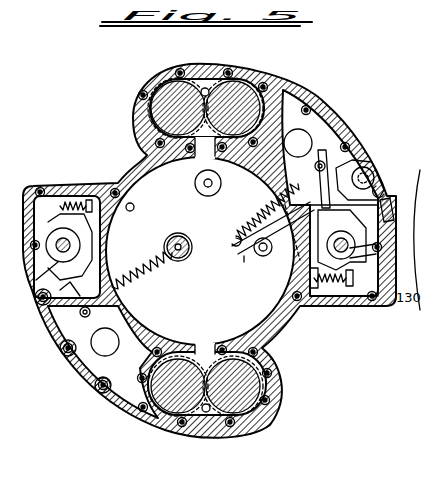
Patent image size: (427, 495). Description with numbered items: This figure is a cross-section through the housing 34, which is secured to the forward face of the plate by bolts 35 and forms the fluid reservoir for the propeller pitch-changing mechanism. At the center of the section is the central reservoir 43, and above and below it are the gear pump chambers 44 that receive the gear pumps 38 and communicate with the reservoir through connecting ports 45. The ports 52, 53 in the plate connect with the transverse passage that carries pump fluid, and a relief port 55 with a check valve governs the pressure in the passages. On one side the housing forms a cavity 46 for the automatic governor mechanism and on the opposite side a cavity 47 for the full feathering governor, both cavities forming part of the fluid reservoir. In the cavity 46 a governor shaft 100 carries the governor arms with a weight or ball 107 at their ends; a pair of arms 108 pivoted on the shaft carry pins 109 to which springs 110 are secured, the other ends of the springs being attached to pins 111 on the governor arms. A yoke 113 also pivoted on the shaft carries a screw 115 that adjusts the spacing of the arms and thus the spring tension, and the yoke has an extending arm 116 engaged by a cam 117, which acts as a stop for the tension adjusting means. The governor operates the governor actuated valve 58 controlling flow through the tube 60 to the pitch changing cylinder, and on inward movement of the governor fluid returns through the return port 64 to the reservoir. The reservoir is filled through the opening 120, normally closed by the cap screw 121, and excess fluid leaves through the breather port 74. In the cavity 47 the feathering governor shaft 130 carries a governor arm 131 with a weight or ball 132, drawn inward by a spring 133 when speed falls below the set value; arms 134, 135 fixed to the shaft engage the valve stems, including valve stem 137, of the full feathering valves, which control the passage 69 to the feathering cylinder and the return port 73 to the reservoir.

The housing 34 is at (80, 381).
The bolts 35 is at (96, 392).
The gear pumps 38 is at (250, 80).
The central reservoir 43 is at (268, 318).
The gear pump chambers 44 is at (203, 78).
The connecting ports 45 is at (198, 150).
The cavity 46 is at (300, 100).
The cavity 47 is at (55, 352).
The port 52 is at (206, 88).
The port 53 is at (210, 412).
The relief port 55 is at (212, 183).
The governor actuated valve 58 is at (348, 286).
The tube 60 is at (263, 256).
The return port 64 is at (284, 226).
The passage 69 is at (186, 256).
The return port 73 is at (133, 205).
The breather port 74 is at (186, 238).
The shaft 100 is at (376, 270).
The weight or ball 107 is at (308, 135).
The arms 108 is at (250, 265).
The pins 109 is at (236, 249).
The springs 110 is at (270, 210).
The pins 111 is at (330, 171).
The yoke 113 is at (372, 238).
The screw 115 is at (372, 170).
The extending arm 116 is at (350, 165).
The cam 117 is at (374, 160).
The opening 120 is at (386, 192).
The cap screw 121 is at (394, 208).
The shaft 130 is at (72, 243).
The governor arm 131 is at (80, 313).
The weight or ball 132 is at (119, 342).
The spring 133 is at (142, 284).
The arm 134 is at (36, 286).
The arm 135 is at (50, 196).
The valve stem 137 is at (80, 200).